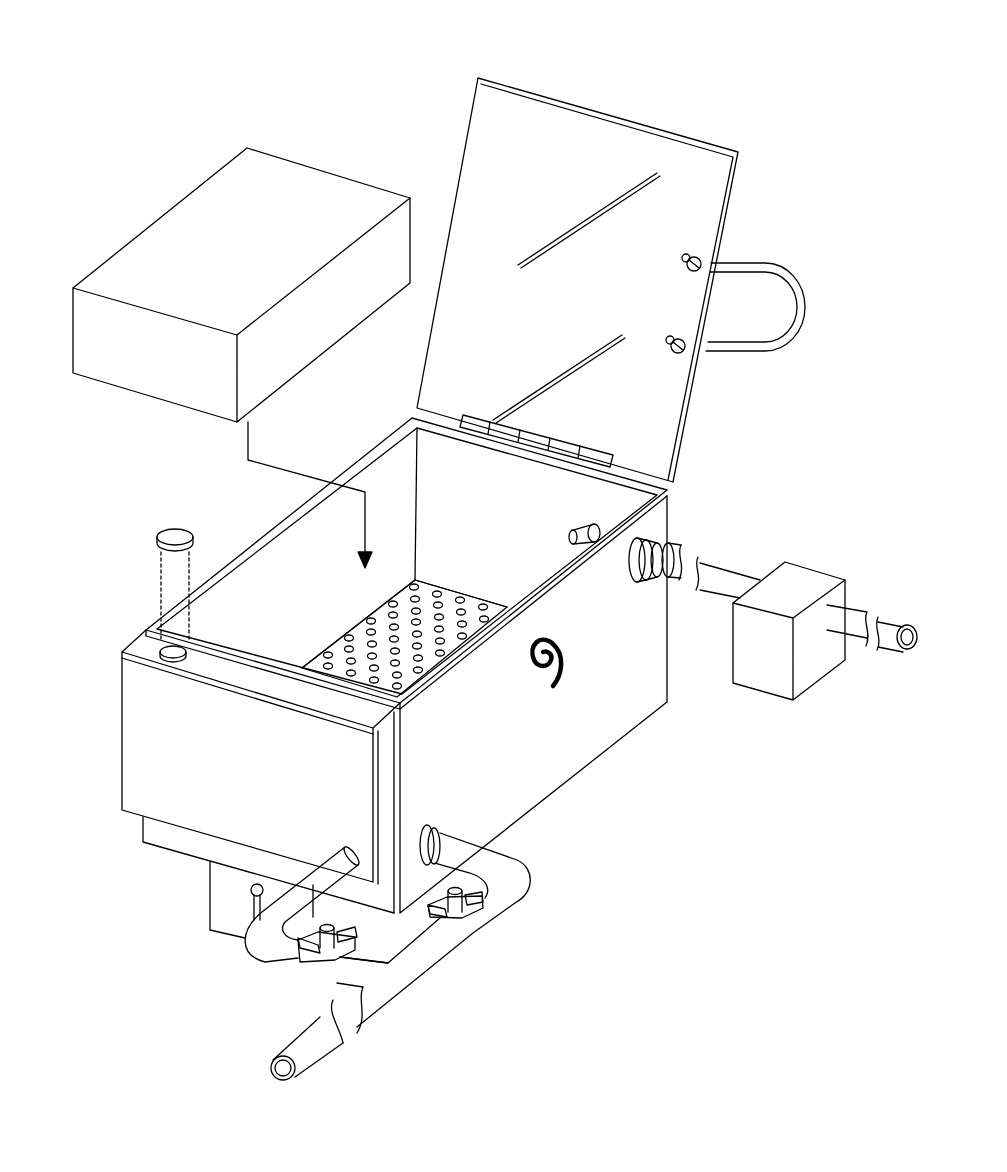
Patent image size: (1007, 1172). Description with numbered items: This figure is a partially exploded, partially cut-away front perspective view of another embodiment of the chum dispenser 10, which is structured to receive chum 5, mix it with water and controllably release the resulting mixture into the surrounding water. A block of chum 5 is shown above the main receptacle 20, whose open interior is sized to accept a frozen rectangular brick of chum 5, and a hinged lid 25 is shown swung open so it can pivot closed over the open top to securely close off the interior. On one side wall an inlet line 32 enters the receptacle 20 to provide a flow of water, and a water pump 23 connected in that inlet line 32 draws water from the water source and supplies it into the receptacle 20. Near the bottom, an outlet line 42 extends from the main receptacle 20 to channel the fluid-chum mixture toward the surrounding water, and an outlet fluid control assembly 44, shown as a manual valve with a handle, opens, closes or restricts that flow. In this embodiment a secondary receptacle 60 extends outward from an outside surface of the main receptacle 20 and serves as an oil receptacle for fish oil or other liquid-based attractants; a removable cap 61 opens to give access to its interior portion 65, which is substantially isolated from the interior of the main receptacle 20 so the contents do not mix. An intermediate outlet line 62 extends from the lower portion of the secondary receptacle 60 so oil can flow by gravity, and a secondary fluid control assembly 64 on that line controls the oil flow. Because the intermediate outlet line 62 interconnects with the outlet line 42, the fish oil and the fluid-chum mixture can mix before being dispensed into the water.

The chum dispenser 10 is at (778, 160).
The chum 5 is at (283, 197).
The main receptacle 20 is at (593, 720).
The water pump 23 is at (795, 587).
The lid 25 is at (582, 147).
The inlet line 32 is at (728, 580).
The outlet line 42 is at (518, 870).
The outlet fluid control assembly 44 is at (467, 923).
The secondary receptacle 60 is at (150, 775).
The cap 61 is at (174, 530).
The intermediate outlet line 62 is at (257, 938).
The secondary fluid control assembly 64 is at (323, 952).
The interior portion 65 is at (165, 648).